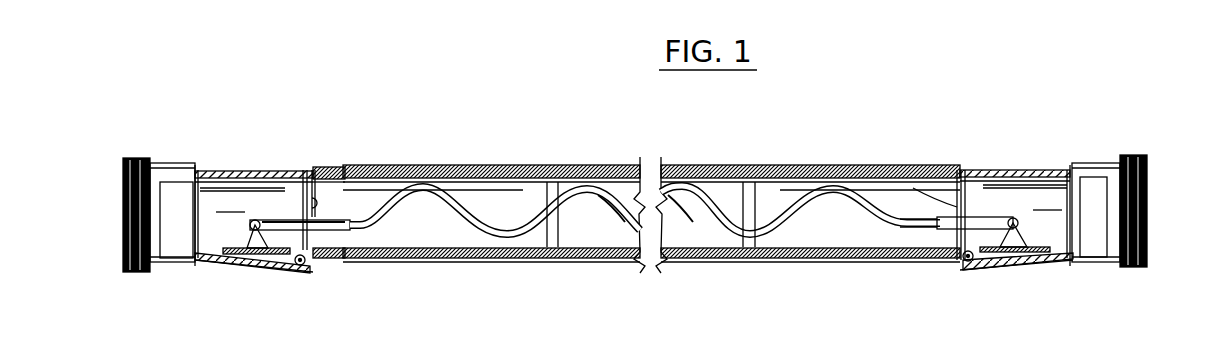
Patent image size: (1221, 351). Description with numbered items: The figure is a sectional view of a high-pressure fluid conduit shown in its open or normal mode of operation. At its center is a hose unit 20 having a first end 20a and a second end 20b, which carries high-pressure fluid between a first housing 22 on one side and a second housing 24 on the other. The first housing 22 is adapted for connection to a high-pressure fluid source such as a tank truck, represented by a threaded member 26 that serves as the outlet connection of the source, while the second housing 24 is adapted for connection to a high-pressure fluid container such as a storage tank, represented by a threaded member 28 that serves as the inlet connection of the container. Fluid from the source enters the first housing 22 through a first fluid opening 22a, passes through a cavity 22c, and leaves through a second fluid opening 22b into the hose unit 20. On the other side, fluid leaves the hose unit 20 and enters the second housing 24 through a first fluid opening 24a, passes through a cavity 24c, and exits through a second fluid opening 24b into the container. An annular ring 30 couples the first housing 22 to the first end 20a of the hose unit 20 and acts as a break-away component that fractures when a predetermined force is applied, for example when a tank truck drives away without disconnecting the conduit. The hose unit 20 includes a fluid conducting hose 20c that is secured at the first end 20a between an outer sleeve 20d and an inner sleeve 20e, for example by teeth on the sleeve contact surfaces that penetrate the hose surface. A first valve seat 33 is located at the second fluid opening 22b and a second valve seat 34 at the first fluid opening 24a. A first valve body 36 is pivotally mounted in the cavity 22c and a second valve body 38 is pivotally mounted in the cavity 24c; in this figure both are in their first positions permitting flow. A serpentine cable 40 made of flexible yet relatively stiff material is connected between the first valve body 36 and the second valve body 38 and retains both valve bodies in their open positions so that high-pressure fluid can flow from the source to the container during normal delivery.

The hose unit 20 is at (778, 271).
The first end of hose unit 20a is at (390, 260).
The second end of hose unit 20b is at (877, 260).
The fluid conducting hose 20c is at (573, 260).
The outer sleeve 20d is at (453, 165).
The inner sleeve 20e is at (513, 260).
The first housing 22 is at (236, 277).
The first fluid opening of first housing 22a is at (176, 163).
The second fluid opening of first housing 22b is at (280, 182).
The cavity of first housing 22c is at (254, 215).
The second housing 24 is at (1019, 283).
The first fluid opening of second housing 24a is at (897, 165).
The second fluid opening of second housing 24b is at (1088, 165).
The cavity of second housing 24c is at (991, 215).
The threaded member 26 is at (125, 207).
The threaded member 28 is at (1146, 199).
The annular ring 30 is at (333, 167).
The first valve seat 33 is at (310, 267).
The second valve seat 34 is at (960, 262).
The first valve body 36 is at (262, 270).
The second valve body 38 is at (1045, 259).
The serpentine cable 40 is at (617, 220).